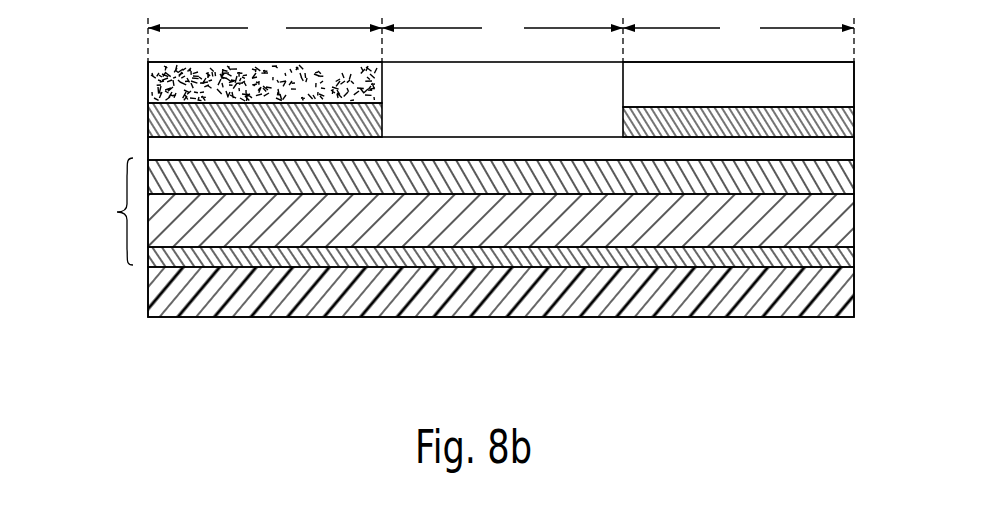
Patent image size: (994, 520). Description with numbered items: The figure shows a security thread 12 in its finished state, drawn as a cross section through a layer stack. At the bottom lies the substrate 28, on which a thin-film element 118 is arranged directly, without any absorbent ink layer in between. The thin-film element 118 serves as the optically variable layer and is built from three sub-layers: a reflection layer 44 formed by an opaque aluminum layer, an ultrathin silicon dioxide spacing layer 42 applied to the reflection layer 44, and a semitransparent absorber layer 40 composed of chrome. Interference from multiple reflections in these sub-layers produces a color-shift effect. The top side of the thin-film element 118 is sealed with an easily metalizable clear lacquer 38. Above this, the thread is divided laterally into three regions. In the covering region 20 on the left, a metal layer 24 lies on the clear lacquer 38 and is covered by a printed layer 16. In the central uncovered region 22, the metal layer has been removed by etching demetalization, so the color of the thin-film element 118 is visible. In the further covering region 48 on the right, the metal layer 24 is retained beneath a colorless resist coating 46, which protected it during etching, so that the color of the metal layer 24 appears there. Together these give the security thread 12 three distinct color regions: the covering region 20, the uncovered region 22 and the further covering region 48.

The security thread 12 is at (108, 62).
The sensitive layer 16 is at (157, 83).
The covering region 20 is at (265, 37).
The uncovered region 22 is at (502, 37).
The metal layer 24 is at (156, 120).
The substrate 28 is at (837, 297).
The clear lacquer 38 is at (837, 150).
The absorber layer 40 is at (842, 179).
The spacing layer 42 is at (838, 220).
The reflection layer 44 is at (838, 256).
The colorless resist coating 46 is at (837, 86).
The further covering region 48 is at (738, 37).
The thin-film element 118 is at (488, 214).